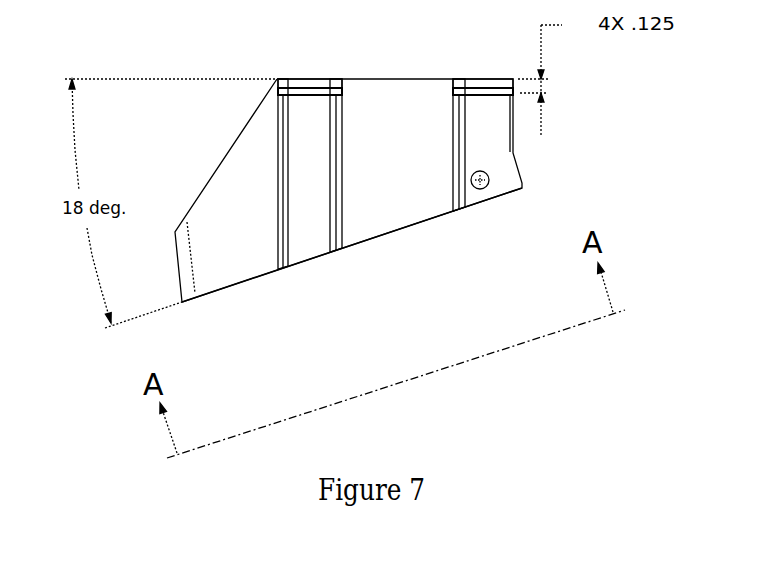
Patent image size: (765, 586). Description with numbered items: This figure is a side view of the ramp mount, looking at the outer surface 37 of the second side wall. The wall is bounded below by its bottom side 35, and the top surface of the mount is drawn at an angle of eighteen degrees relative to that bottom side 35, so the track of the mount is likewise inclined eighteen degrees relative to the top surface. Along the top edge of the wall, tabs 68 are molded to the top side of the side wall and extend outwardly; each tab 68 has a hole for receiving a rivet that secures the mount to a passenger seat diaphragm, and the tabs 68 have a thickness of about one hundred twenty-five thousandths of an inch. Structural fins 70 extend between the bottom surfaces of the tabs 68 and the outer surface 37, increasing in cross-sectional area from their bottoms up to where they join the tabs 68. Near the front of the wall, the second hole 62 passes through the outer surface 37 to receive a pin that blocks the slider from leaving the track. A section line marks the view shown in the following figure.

The bottom side of second side wall 35 is at (228, 288).
The outer surface of second side wall 37 is at (413, 156).
The second hole 62 is at (503, 183).
The tabs 68 is at (307, 88).
The structural fins 70 is at (293, 192).